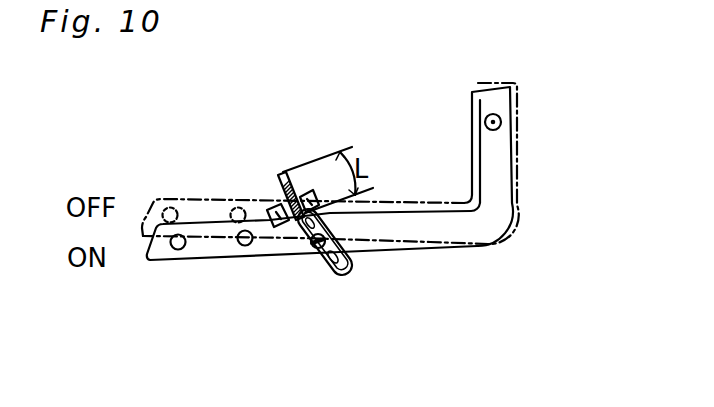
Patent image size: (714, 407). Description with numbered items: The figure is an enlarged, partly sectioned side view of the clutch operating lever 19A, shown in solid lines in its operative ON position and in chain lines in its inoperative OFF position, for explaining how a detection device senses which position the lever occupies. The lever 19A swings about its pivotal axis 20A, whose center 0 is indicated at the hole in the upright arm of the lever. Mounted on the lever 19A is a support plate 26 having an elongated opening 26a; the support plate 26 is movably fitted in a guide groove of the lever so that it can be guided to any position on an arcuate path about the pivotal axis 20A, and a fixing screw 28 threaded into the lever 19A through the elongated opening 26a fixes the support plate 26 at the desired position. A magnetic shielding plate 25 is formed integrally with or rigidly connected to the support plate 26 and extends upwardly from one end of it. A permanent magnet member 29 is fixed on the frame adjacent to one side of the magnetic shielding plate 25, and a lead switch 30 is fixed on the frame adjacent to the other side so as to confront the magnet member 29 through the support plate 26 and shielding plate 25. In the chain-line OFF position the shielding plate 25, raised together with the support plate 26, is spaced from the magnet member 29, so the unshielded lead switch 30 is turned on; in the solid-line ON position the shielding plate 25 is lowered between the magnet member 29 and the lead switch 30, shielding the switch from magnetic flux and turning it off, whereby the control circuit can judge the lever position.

The operating lever 19A is at (447, 232).
The pivotal axis 20A is at (502, 126).
The center of the pivotal axis 0 is at (494, 122).
The magnetic shielding plate 25 is at (281, 177).
The lead switch 30 is at (274, 227).
The permanent magnet member 29 is at (304, 213).
The support plate 26 is at (344, 271).
The elongated opening 26a is at (331, 262).
The fixing screw 28 is at (317, 248).